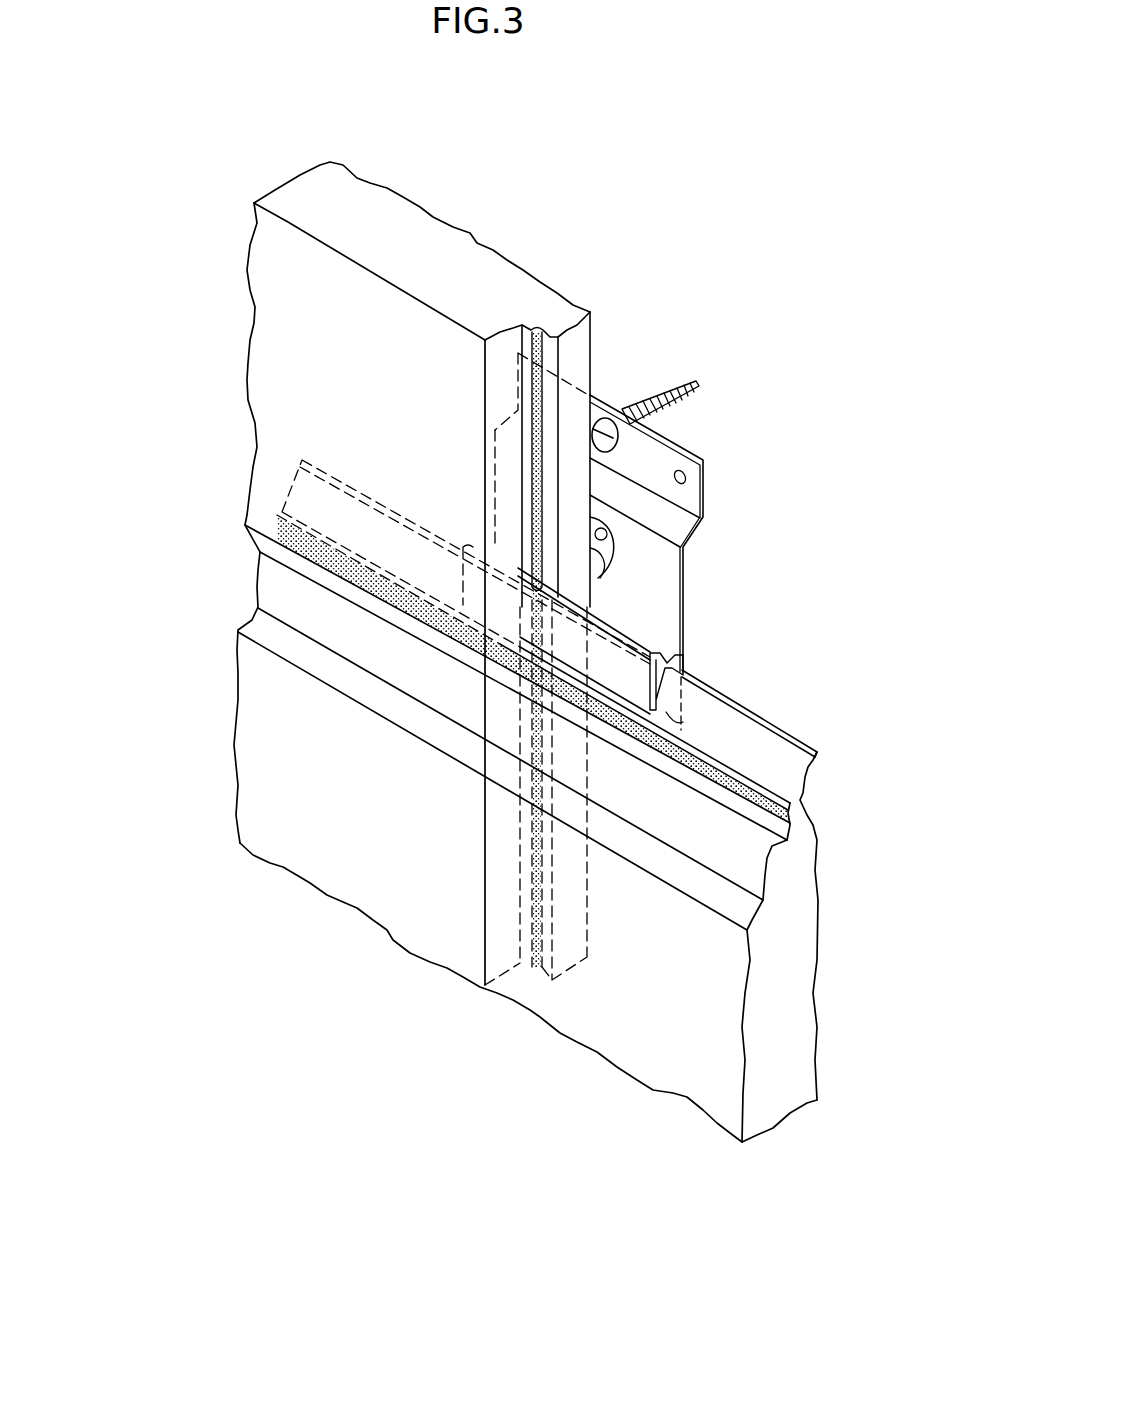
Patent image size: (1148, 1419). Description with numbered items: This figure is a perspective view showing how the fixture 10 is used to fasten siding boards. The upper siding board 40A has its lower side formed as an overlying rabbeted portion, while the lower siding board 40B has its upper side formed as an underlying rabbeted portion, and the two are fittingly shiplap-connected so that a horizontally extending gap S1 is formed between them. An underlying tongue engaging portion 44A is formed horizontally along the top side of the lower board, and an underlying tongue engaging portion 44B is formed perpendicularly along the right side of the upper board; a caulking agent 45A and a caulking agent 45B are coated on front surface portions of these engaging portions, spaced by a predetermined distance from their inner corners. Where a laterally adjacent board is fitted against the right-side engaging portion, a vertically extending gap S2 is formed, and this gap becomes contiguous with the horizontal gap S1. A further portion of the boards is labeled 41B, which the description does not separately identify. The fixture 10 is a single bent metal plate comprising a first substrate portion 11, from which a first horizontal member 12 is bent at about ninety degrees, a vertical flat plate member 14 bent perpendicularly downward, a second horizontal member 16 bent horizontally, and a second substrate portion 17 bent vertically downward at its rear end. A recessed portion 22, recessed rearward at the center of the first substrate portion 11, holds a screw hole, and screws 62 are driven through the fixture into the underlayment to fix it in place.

The fixture 10 is at (753, 441).
The first substrate portion 11 is at (660, 558).
The first horizontal member 12 is at (668, 658).
The vertical flat plate member 14 is at (615, 673).
The second horizontal member 16 is at (687, 677).
The second substrate portion 17 is at (672, 722).
The recessed portion 22 is at (600, 573).
The upper siding board 40A is at (226, 334).
The lower siding board 40B is at (226, 790).
The panel end portion 41B is at (498, 600).
The underlying tongue engaging portion 44A is at (782, 770).
The underlying tongue engaging portion 44B is at (568, 312).
The caulking agent 45A is at (787, 812).
The caulking agent 45B is at (542, 350).
The screw 62 is at (688, 384).
The gap S1 is at (322, 565).
The gap S2 is at (521, 322).